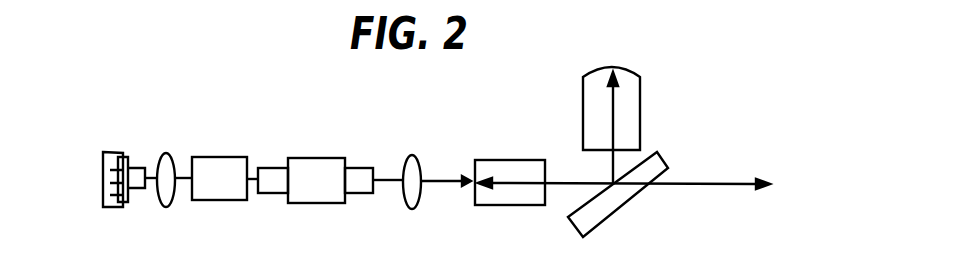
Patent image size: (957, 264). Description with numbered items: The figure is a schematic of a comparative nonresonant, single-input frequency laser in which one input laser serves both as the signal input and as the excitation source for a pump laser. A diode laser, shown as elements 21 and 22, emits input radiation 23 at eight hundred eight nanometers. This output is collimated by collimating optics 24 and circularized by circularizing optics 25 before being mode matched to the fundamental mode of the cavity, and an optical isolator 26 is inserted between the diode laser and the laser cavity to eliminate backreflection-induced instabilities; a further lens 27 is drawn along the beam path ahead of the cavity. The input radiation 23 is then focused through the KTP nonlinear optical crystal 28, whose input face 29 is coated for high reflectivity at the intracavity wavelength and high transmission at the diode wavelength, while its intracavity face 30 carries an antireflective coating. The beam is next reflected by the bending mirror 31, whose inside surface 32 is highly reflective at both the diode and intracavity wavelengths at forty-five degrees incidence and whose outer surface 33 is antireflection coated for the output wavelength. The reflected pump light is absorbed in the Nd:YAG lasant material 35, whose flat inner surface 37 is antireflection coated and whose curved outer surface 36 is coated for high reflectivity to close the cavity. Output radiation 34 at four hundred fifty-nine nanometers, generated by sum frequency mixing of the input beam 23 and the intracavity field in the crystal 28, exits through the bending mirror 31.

The diode laser 21 is at (103, 178).
The diode laser 22 is at (141, 167).
The input radiation 23 is at (149, 182).
The collimating optics 24 is at (171, 202).
The circularizing optics 25 is at (242, 157).
The optical isolation 26 is at (306, 158).
The focusing lens 27 is at (418, 201).
The KTP nonlinear optical crystal 28 is at (517, 205).
The input face 29 is at (477, 204).
The intracavity face 30 is at (545, 160).
The bending mirror 31 is at (598, 208).
The inside surface 32 is at (578, 206).
The outer surface 33 is at (638, 198).
The output radiation 34 is at (791, 186).
The Nd:YAG lasant material 35 is at (628, 117).
The outer surface 36 is at (625, 68).
The inner surface 37 is at (647, 155).